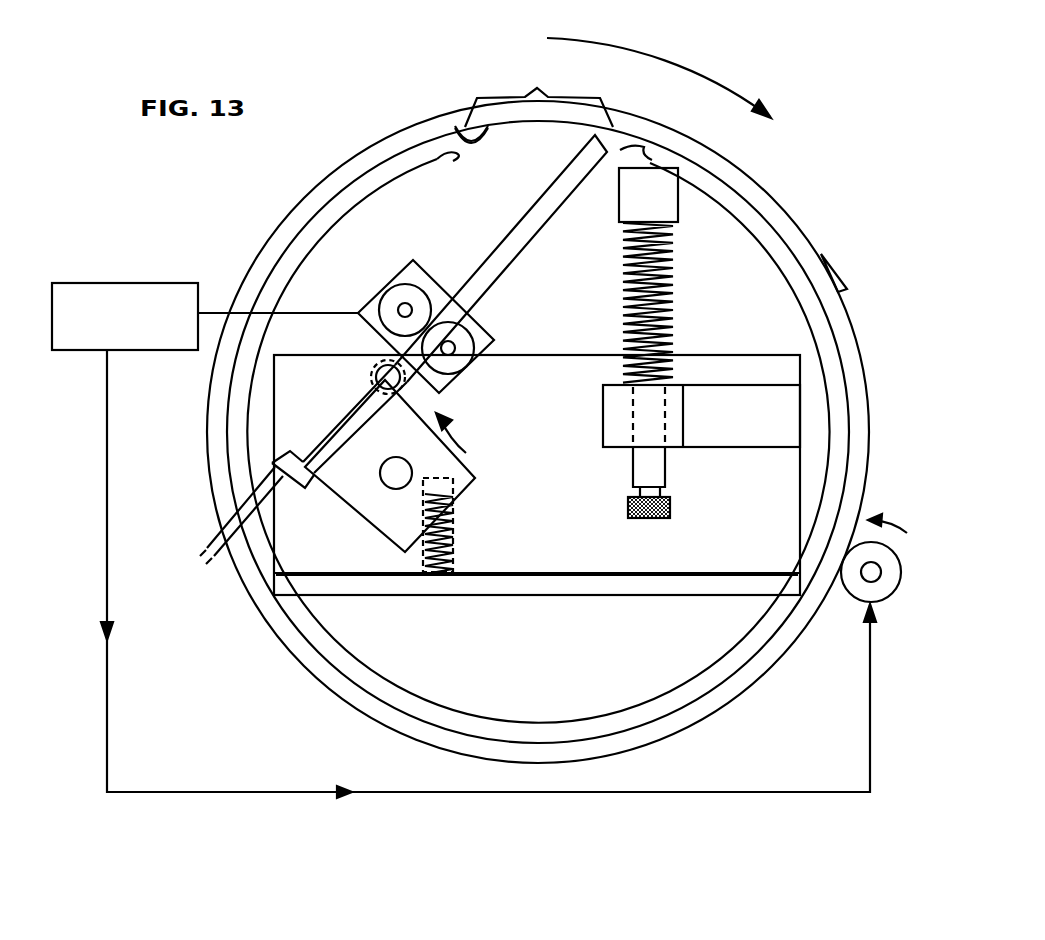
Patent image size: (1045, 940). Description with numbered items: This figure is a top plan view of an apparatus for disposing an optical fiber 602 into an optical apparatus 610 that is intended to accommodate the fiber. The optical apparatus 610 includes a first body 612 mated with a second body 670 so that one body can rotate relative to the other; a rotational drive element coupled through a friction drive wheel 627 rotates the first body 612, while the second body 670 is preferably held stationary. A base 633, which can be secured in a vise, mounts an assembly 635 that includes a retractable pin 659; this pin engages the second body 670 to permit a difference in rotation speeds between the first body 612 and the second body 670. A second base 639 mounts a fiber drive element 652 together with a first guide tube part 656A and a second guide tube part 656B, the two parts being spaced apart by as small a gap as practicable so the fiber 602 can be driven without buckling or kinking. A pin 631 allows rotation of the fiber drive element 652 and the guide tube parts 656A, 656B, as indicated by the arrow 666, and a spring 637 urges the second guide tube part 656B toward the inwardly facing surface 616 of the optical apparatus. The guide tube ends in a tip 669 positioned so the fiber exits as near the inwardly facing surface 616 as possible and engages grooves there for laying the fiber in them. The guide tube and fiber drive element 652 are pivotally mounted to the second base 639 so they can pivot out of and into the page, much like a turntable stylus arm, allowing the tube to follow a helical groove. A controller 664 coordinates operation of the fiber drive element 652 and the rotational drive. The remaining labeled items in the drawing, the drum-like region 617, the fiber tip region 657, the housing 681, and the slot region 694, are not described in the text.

The optical fiber 602 is at (222, 555).
The optical apparatus 610 is at (868, 405).
The first body 612 is at (850, 367).
The inwardly facing surface 616 is at (450, 137).
The rotating drum 617 is at (618, 625).
The friction drive wheel 627 is at (888, 592).
The pin 631 is at (385, 478).
The base 633 is at (564, 530).
The assembly 635 is at (677, 374).
The spring 637 is at (452, 492).
The second base 639 is at (400, 448).
The fiber drive element 652 is at (423, 269).
The first guide tube part 656A is at (328, 433).
The second guide tube part 656B is at (521, 231).
The arm tip 657 is at (280, 468).
The retractable pin 659 is at (652, 190).
The controller 664 is at (147, 352).
The rotation of fiber drive element and guide tube parts 666 is at (458, 428).
The tip 669 is at (590, 135).
The second body 670 is at (822, 333).
The housing 681 is at (762, 488).
The slot region 694 is at (539, 96).